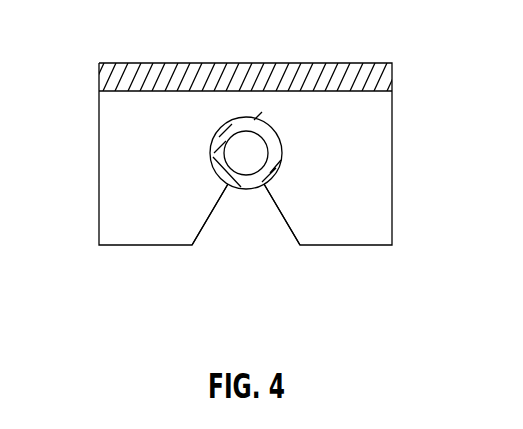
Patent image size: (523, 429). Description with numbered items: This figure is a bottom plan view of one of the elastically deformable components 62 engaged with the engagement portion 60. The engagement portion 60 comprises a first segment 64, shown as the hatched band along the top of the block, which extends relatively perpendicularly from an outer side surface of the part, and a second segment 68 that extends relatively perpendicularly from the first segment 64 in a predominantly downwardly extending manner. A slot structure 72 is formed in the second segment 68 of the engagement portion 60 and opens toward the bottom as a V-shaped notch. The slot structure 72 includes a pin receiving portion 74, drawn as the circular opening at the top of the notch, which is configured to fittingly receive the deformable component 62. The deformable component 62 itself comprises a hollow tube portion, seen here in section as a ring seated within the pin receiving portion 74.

The engagement portion 60 is at (108, 39).
The elastically deformable component 62 is at (282, 161).
The first segment 64 is at (361, 79).
The second segment 68 is at (117, 175).
The slot structure 72 is at (245, 221).
The pin receiving portion 74 is at (264, 124).